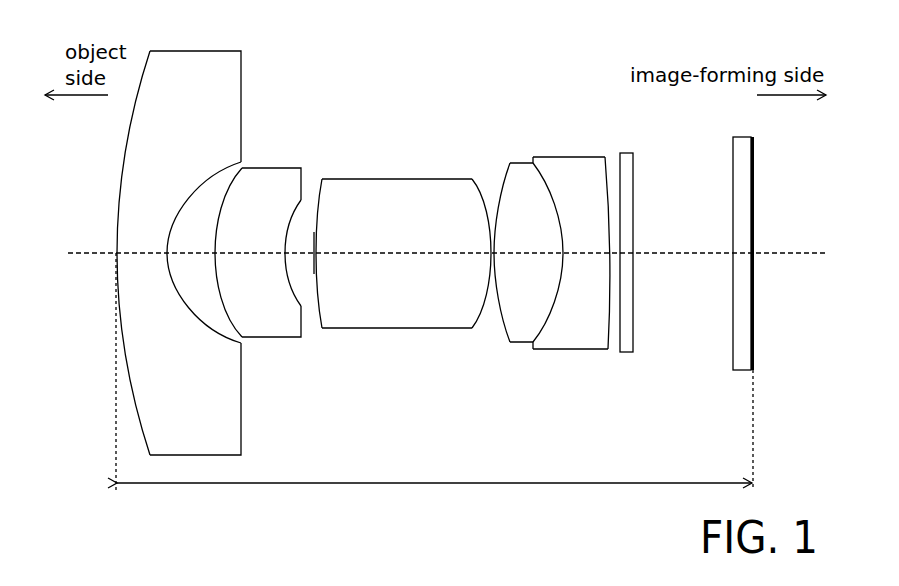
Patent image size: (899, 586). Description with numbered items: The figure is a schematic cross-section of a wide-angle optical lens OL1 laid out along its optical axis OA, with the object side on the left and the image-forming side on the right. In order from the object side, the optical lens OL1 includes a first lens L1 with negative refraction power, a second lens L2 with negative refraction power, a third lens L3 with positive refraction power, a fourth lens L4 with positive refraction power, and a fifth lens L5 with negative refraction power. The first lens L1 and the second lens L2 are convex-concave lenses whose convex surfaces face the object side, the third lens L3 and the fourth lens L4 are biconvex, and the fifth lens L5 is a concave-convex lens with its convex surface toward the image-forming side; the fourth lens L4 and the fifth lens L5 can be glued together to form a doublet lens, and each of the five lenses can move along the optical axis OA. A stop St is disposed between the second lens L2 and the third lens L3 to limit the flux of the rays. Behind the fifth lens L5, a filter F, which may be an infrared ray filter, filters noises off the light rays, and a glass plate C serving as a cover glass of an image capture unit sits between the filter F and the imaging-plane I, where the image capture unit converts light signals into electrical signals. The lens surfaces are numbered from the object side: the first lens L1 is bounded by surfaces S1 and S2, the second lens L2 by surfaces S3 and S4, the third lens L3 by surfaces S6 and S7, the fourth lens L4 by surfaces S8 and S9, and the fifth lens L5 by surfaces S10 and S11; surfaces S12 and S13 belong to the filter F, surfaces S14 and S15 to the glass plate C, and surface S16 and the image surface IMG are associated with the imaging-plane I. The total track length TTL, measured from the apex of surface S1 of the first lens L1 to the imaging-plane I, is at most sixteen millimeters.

The optical lens OL1 is at (830, 46).
The optical axis OA is at (791, 252).
The first lens L1 is at (185, 253).
The second lens L2 is at (276, 303).
The third lens L3 is at (397, 250).
The fourth lens L4 is at (525, 268).
The fifth lens L5 is at (580, 297).
The stop St is at (315, 232).
The filter F is at (629, 250).
The glass plate C is at (749, 269).
The imaging-plane I is at (755, 148).
The image surface IMG is at (754, 317).
The total track length TTL is at (434, 383).
The first surface of the first lens S1 is at (129, 388).
The image-side surface of the first lens S2 is at (213, 176).
The object-side surface of the second lens S3 is at (227, 314).
The image-side surface of the second lens S4 is at (296, 291).
The object-side surface of the third lens S6 is at (314, 230).
The image-side surface of the third lens S7 is at (480, 187).
The object-side surface of the fourth lens S8 is at (504, 172).
The image-side surface of the fourth lens S9 is at (543, 169).
The object-side surface of the fifth lens S10 is at (546, 322).
The image-side surface of the fifth lens S11 is at (607, 339).
The object-side surface of the filter S12 is at (618, 165).
The image-side surface of the filter S13 is at (636, 168).
The object-side surface of the glass plate S14 is at (732, 347).
The image-side surface of the glass plate S15 is at (754, 347).
The imaging-plane surface S16 is at (751, 170).